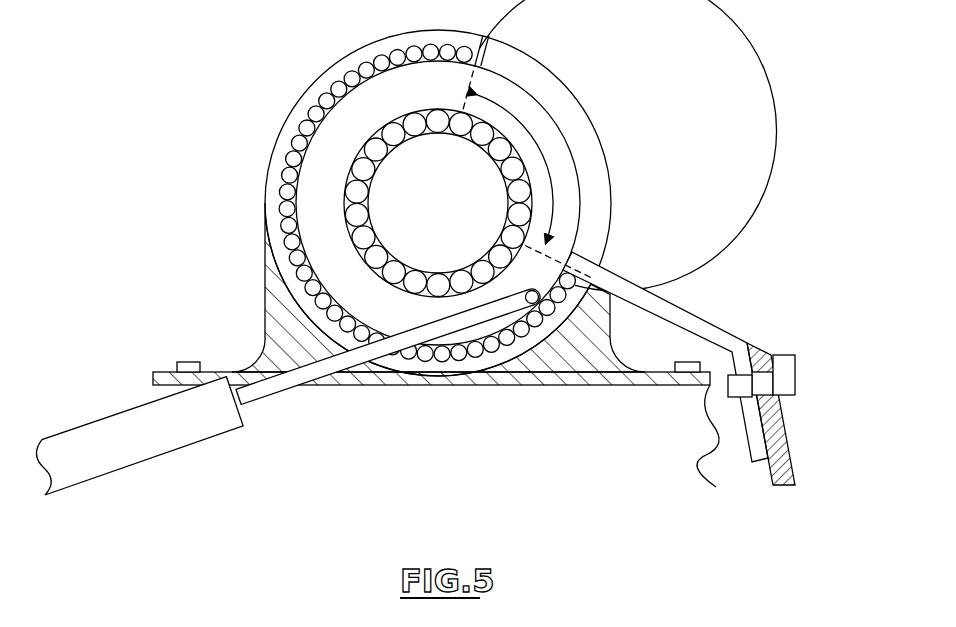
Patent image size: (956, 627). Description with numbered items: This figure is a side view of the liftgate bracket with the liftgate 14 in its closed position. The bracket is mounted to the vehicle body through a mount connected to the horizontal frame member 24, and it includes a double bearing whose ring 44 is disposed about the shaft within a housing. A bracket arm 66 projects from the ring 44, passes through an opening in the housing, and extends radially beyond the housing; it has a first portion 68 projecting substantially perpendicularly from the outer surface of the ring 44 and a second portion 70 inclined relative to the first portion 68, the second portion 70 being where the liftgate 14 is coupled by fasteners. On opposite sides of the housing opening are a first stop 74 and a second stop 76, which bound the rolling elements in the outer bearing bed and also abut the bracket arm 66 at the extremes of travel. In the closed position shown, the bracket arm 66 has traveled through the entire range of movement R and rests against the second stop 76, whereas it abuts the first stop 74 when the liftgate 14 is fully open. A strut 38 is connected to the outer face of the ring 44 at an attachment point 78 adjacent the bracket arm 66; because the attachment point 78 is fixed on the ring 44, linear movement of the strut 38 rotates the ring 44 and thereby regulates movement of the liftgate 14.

The liftgate 14 is at (791, 468).
The horizontal frame member 24 is at (452, 444).
The strut 38 is at (344, 345).
The ring 44 is at (553, 137).
The bracket arm 66 is at (646, 348).
The first portion 68 is at (667, 307).
The second portion 70 is at (750, 428).
The first stop 74 is at (490, 45).
The second stop 76 is at (600, 264).
The attachment point 78 is at (536, 291).
The range of movement R is at (519, 122).